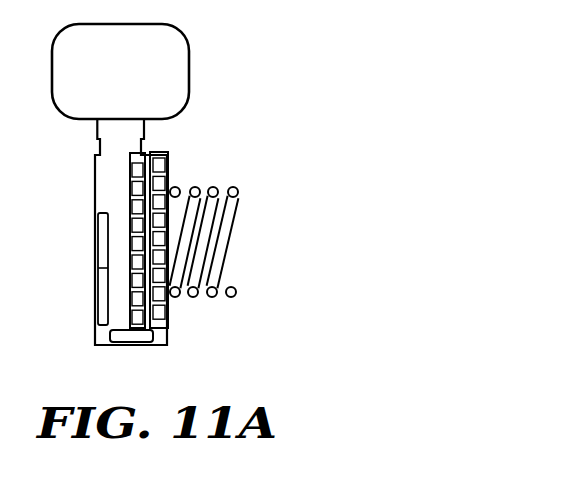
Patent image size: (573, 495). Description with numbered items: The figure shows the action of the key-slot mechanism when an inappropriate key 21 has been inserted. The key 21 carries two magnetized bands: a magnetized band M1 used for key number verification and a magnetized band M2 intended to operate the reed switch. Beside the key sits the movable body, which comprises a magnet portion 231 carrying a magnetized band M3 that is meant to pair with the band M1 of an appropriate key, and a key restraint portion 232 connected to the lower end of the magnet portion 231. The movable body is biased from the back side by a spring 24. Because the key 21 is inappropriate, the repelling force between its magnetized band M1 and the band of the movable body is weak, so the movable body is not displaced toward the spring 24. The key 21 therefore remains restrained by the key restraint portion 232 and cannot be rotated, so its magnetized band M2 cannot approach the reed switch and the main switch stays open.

The key 21 is at (170, 82).
The magnet portion 231 is at (168, 318).
The key restraint portion 232 is at (123, 337).
The magnetized band M1 is at (130, 184).
The magnetized band M2 is at (98, 257).
The magnetized band M3 is at (168, 172).
The spring 24 is at (227, 218).